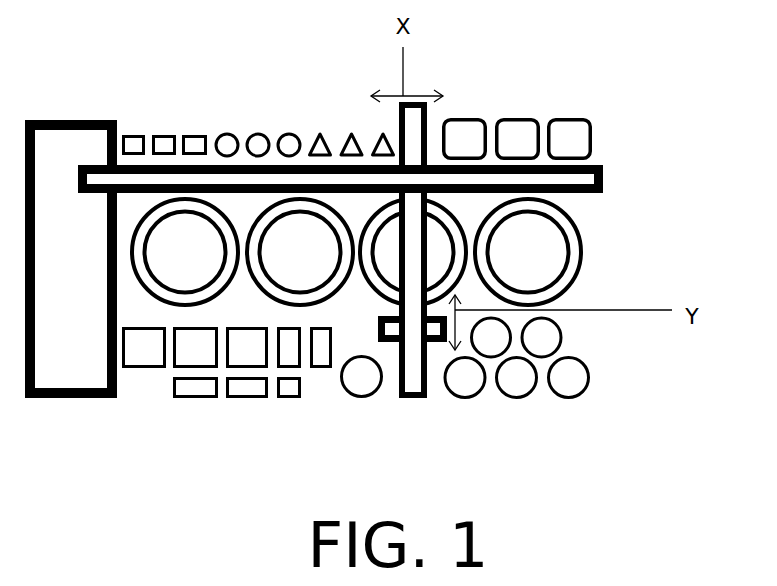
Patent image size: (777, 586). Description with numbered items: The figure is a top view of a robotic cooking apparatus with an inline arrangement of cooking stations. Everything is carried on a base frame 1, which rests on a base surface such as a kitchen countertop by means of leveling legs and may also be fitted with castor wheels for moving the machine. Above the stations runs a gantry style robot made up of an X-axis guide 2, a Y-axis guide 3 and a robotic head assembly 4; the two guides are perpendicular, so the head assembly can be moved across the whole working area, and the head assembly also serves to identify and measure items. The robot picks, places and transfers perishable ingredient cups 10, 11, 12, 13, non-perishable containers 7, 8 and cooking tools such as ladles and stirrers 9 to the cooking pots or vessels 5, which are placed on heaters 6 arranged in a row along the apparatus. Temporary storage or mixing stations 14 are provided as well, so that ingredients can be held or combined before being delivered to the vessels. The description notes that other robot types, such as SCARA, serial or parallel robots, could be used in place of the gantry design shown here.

The base frame 1 is at (70, 120).
The X-axis guide 2 is at (605, 175).
The Y-axis guide 3 is at (428, 137).
The robotic head assembly 4 is at (447, 340).
The cooking pots or vessels 5 is at (580, 250).
The heaters 6 is at (558, 223).
The non-perishable containers 7 is at (133, 135).
The non-perishable containers 8 is at (225, 133).
The cooking tools (ladles, stirrers) 9 is at (321, 136).
The perishable ingredient cups 10 is at (143, 368).
The perishable ingredient cups 11 is at (197, 398).
The perishable ingredient cups 12 is at (319, 368).
The perishable ingredient cups 13 is at (515, 398).
The temporary storage or mixing stations 14 is at (568, 118).